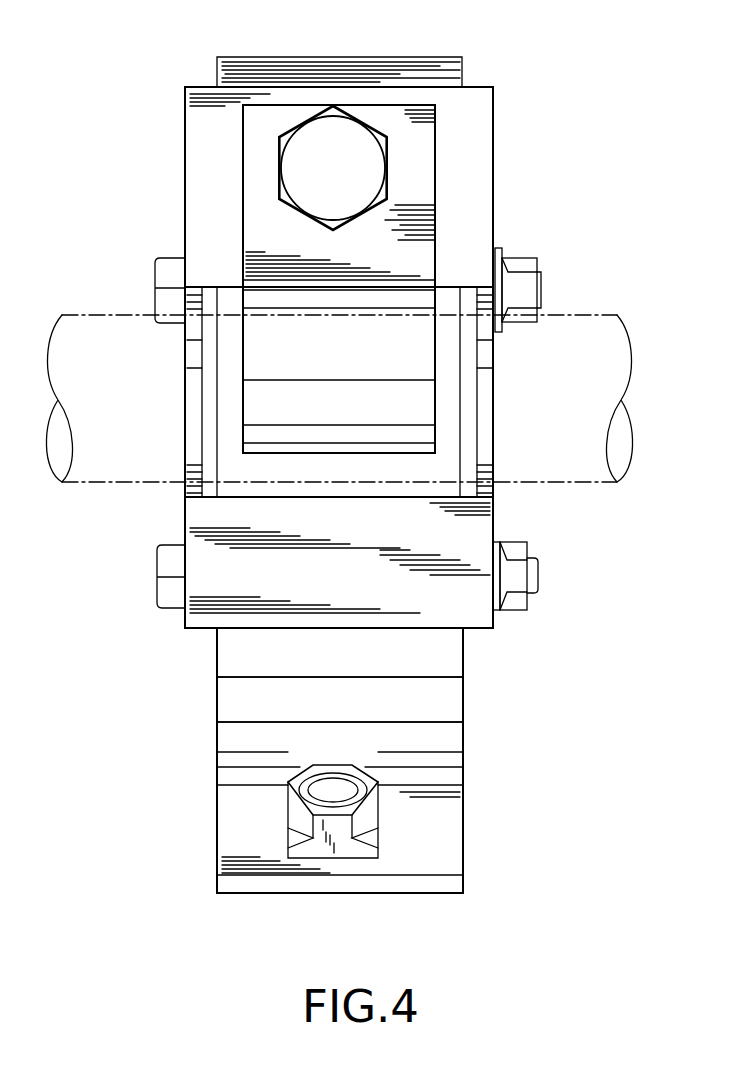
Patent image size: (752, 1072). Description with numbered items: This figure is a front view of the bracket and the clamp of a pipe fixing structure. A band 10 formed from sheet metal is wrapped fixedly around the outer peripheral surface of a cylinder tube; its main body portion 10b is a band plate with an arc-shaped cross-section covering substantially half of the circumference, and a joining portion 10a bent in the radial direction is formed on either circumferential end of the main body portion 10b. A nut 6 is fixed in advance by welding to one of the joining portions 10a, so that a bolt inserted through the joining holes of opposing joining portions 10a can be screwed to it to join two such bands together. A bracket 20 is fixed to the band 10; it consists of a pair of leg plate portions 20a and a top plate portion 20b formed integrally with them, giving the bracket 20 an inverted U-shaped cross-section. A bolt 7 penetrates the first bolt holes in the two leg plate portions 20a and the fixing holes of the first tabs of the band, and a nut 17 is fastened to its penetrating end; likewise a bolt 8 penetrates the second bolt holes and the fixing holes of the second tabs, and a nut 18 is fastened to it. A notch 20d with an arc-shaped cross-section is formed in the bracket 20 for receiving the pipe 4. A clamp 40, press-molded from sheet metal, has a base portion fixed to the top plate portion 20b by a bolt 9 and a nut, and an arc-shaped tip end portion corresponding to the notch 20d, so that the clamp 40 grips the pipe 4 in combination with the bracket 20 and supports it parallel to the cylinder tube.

The pipe 4 is at (520, 483).
The nut 6 is at (385, 800).
The bolt 7 is at (158, 580).
The bolt 8 is at (158, 258).
The bolt 9 is at (388, 170).
The band 10 is at (465, 720).
The joining portion 10a is at (435, 848).
The main body portion 10b is at (240, 680).
The nut 17 is at (515, 612).
The nut 18 is at (515, 258).
The bracket 20 is at (496, 210).
The leg plate portion 20a is at (185, 122).
The top plate portion 20b is at (228, 190).
The notch 20d is at (483, 408).
The clamp 40 is at (436, 147).